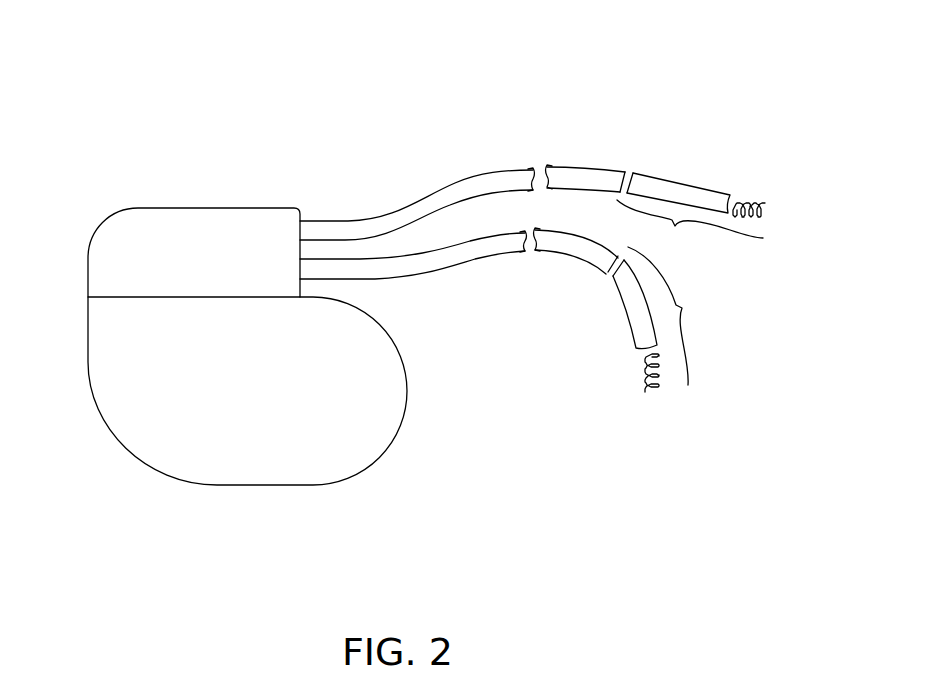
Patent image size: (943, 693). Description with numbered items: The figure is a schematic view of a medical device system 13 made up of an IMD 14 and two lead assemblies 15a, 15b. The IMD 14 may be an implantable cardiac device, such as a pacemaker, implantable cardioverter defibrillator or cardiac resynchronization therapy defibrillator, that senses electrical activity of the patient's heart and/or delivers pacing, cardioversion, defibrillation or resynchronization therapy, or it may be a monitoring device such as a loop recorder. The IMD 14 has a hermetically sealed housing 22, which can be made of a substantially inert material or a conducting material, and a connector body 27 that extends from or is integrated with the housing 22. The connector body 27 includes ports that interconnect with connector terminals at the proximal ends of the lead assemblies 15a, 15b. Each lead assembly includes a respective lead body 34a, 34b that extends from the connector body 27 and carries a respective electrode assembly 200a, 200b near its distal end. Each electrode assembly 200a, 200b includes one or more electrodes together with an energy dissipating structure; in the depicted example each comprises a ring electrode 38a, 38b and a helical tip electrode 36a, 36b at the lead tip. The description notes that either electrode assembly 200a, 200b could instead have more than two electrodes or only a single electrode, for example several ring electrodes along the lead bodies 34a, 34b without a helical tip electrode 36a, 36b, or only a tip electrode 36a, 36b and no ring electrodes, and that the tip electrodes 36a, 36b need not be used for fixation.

The medical device system 13 is at (366, 92).
The IMD 14 is at (248, 359).
The lead assembly 15a is at (532, 174).
The lead assembly 15b is at (514, 309).
The housing 22 is at (407, 397).
The connector body 27 is at (98, 285).
The lead body 34a is at (477, 183).
The lead body 34b is at (573, 238).
The tip electrode 36a is at (758, 202).
The tip electrode 36b is at (640, 362).
The ring electrode 38a is at (632, 176).
The ring electrode 38b is at (610, 270).
The electrode assembly 200a is at (690, 222).
The electrode assembly 200b is at (678, 316).